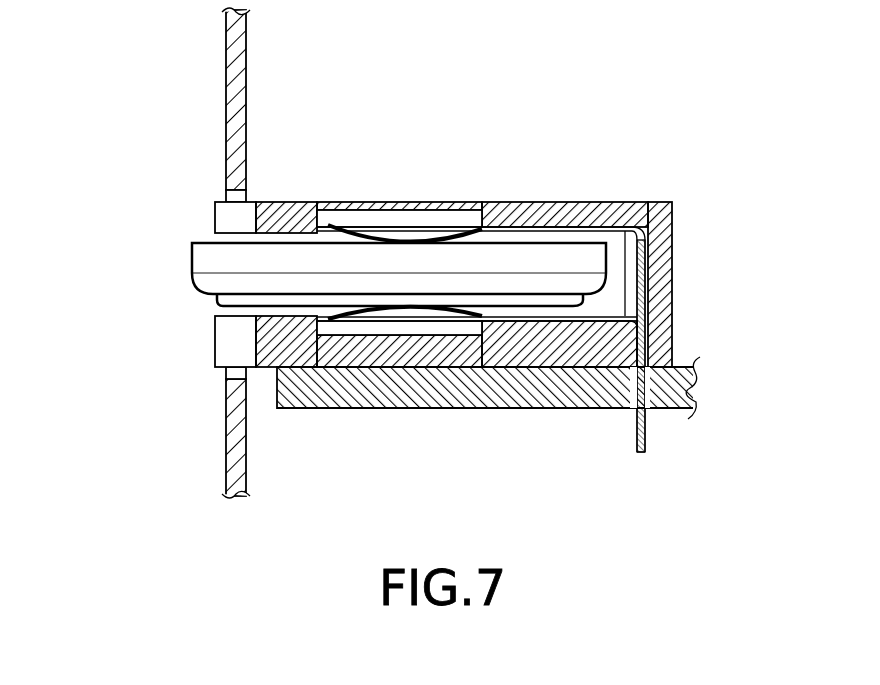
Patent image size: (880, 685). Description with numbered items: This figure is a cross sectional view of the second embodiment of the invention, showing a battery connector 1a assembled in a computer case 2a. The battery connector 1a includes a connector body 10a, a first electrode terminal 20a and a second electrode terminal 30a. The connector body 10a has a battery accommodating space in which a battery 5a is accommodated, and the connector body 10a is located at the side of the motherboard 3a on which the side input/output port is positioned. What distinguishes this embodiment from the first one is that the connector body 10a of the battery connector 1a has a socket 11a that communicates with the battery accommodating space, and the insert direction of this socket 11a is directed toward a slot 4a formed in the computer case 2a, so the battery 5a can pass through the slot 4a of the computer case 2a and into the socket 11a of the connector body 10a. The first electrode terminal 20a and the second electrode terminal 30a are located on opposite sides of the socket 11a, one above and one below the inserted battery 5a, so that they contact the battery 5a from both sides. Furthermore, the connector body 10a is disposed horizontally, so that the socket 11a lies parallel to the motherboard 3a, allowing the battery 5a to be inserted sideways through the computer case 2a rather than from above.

The battery connector 1a is at (392, 276).
The computer case 2a is at (232, 97).
The motherboard 3a is at (472, 408).
The slot 4a is at (230, 192).
The battery 5a is at (208, 262).
The connector body 10a is at (567, 215).
The socket 11a is at (230, 240).
The first electrode terminal 20a is at (397, 238).
The second electrode terminal 30a is at (403, 307).